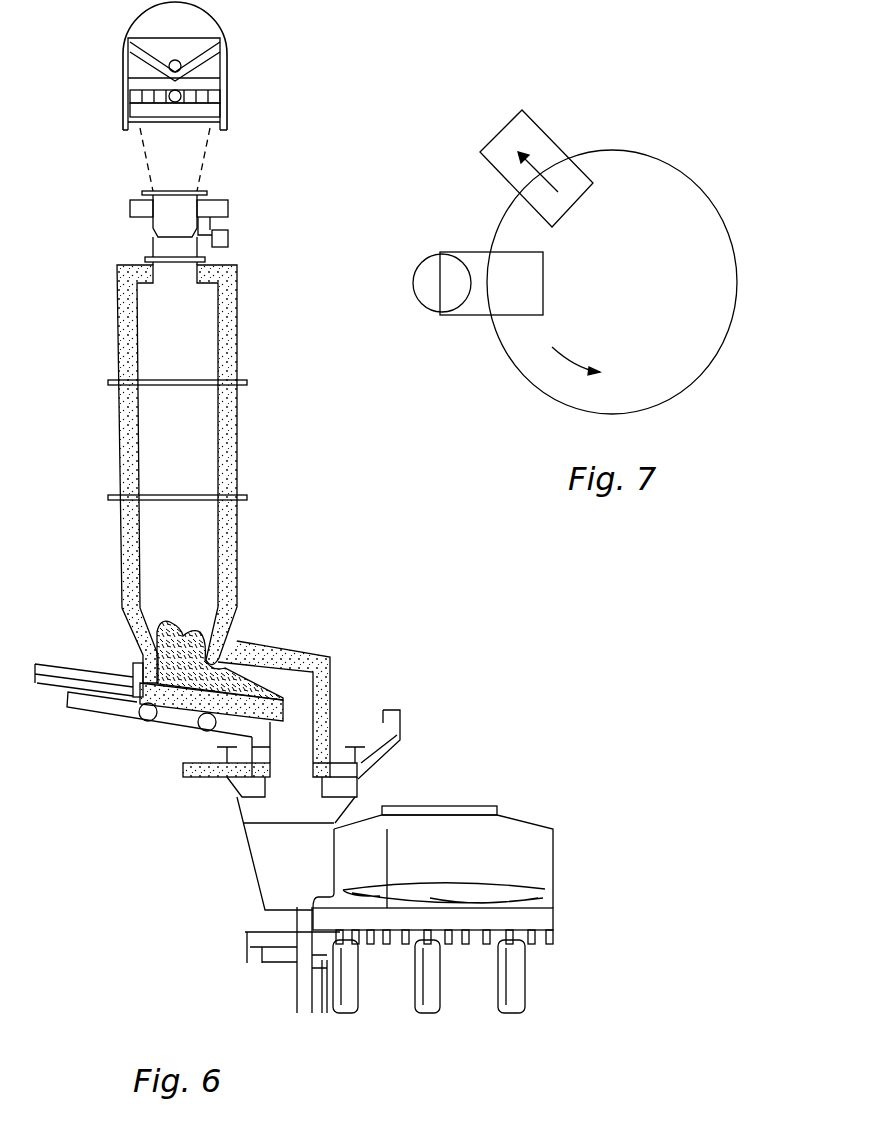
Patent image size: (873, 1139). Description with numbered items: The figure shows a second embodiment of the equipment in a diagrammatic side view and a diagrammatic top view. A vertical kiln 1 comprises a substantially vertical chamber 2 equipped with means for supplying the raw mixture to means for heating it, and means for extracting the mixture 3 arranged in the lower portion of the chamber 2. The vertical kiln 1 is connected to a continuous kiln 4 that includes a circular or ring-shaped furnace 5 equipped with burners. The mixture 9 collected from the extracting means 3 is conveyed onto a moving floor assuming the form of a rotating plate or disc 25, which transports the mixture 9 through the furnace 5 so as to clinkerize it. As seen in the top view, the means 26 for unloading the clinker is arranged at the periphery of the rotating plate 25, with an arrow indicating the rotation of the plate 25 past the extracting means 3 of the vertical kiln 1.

In FIG. 6, the vertical kiln 1 is at (100, 362).
In FIG. 7, the vertical kiln 1 is at (438, 270).
In FIG. 6, the vertical chamber 2 is at (205, 458).
In FIG. 6, the means for extracting the mixture 3 is at (126, 738).
In FIG. 7, the means for extracting the mixture 3 is at (482, 272).
In FIG. 6, the continuous kiln 4 is at (540, 808).
In FIG. 7, the continuous kiln 4 is at (669, 150).
In FIG. 6, the furnace 5 is at (533, 860).
In FIG. 6, the mixture 9 is at (178, 630).
In FIG. 6, the rotating plate 25 is at (533, 922).
In FIG. 7, the rotating plate 25 is at (700, 215).
In FIG. 7, the means for unloading the clinker 26 is at (534, 138).